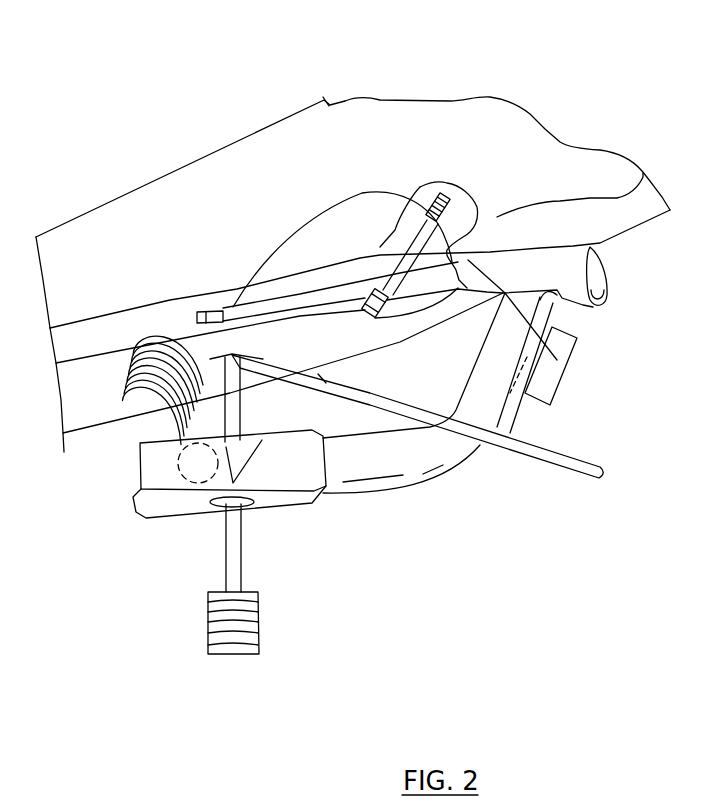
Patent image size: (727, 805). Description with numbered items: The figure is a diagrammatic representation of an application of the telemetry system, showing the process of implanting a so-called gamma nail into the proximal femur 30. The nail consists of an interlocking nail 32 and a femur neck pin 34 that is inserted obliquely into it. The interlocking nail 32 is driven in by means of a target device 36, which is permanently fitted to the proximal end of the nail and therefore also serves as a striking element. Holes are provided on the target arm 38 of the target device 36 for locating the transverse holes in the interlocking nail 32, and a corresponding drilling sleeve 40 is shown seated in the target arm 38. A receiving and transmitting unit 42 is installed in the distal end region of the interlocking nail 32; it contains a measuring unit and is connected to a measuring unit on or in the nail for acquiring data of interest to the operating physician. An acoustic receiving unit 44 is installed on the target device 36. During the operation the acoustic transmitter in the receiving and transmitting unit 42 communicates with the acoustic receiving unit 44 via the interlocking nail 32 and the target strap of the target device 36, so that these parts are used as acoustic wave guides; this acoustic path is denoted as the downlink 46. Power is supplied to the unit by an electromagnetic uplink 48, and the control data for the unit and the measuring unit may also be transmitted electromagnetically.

The proximal femur 30 is at (139, 296).
The interlocking nail 32 is at (315, 295).
The femur neck pin 34 is at (437, 187).
The target device 36 is at (432, 495).
The target arm 38 is at (325, 491).
The drilling sleeve 40 is at (237, 563).
The receiving and transmitting unit 42 is at (222, 294).
The acoustic receiving unit 44 is at (566, 383).
The downlink 46 is at (340, 198).
The electromagnetic uplink 48 is at (137, 393).